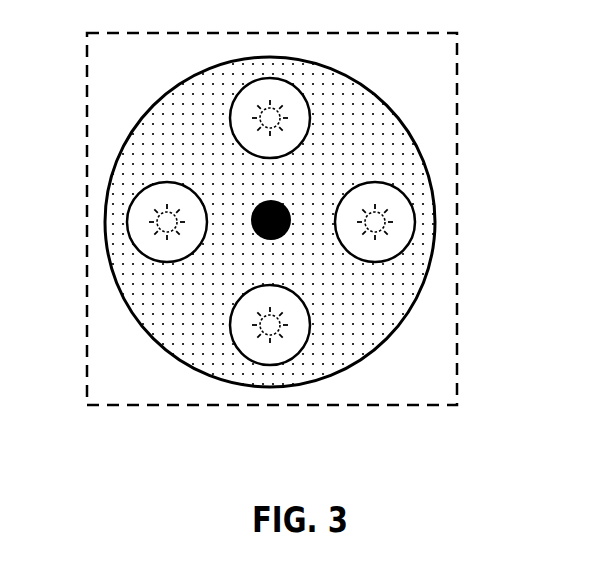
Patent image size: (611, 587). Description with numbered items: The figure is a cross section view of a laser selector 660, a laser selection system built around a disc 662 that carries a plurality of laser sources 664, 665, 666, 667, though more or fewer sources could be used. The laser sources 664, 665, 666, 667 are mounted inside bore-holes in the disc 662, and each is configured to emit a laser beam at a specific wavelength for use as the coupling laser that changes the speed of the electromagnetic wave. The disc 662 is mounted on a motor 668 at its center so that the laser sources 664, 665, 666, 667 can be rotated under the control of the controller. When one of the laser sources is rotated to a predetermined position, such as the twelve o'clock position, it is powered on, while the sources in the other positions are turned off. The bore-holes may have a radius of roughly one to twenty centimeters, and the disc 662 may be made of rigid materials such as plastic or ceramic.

The laser selector 660 is at (340, 219).
The disc 662 is at (329, 222).
The laser source 664 is at (224, 101).
The laser source 665 is at (440, 232).
The laser source 666 is at (163, 325).
The laser source 667 is at (112, 208).
The motor 668 is at (418, 130).